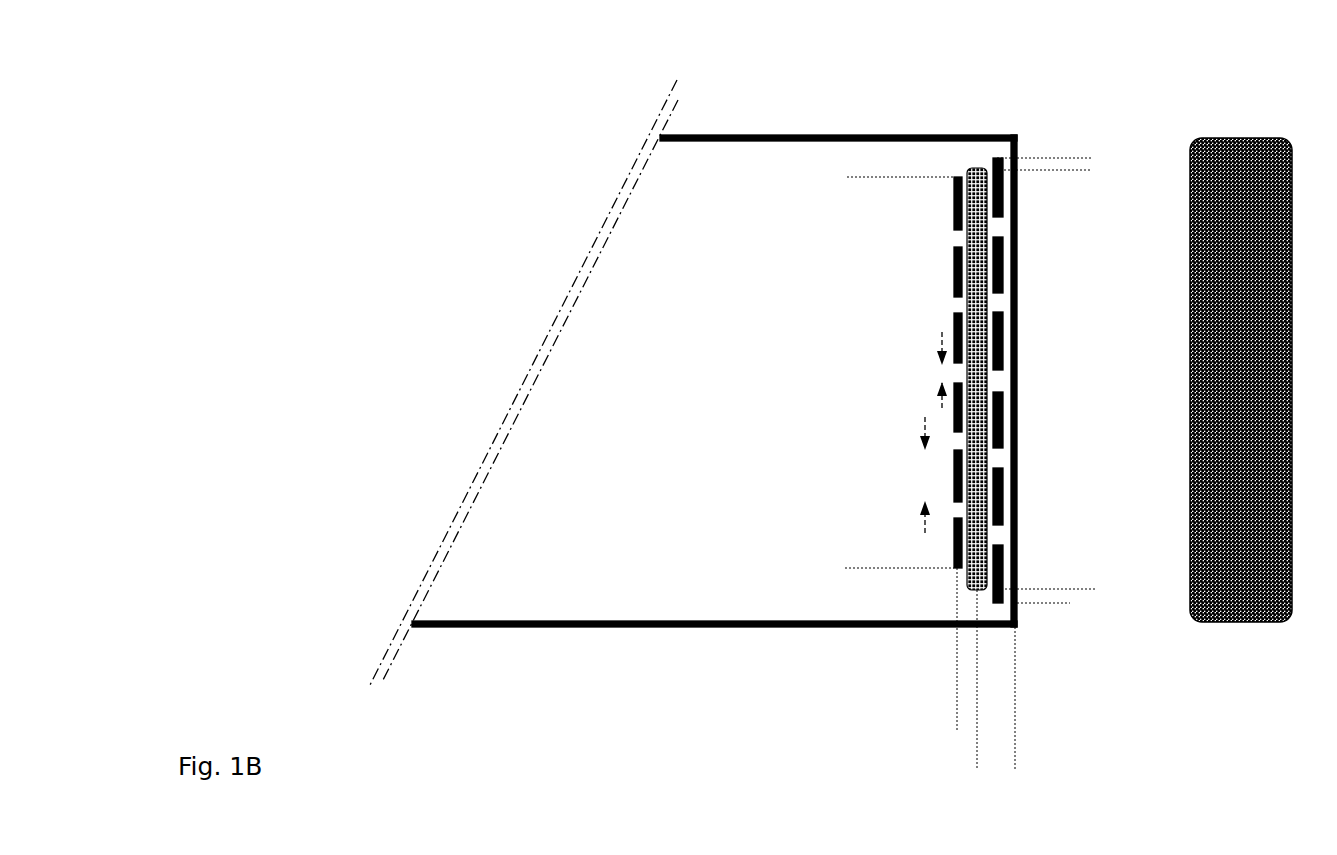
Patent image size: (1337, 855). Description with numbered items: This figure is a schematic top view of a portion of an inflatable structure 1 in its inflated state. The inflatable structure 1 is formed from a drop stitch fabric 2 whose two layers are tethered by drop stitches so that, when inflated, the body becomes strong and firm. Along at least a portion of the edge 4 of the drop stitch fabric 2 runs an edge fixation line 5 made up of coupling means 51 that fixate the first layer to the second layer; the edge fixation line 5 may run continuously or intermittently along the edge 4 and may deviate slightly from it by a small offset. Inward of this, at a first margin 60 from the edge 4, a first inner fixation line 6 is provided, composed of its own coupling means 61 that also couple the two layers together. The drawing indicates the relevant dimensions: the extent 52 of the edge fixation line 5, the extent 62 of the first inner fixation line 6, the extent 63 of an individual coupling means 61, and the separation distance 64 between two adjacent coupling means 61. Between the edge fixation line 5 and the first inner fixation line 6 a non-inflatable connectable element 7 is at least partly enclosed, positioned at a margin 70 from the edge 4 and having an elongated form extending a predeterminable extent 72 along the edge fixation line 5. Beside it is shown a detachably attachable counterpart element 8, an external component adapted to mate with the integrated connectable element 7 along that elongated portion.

The inflatable structure 1 is at (380, 125).
The drop stitch fabric 2 is at (642, 643).
The edge 4 is at (1022, 327).
The edge fixation line 5 is at (1035, 380).
The coupling means 51 is at (1003, 420).
The extent of edge fixation line 52 is at (1038, 120).
The first inner fixation line 6 is at (913, 329).
The coupling means 61 is at (948, 263).
The extent of first inner fixation line 62 is at (865, 150).
The extent of coupling means 63 is at (916, 475).
The separation distance 64 is at (929, 370).
The connectable element 7 is at (982, 248).
The margin 70 is at (1050, 753).
The first margin 60 is at (1050, 722).
The predeterminable extent 72 is at (1080, 133).
The counterpart element 8 is at (1263, 637).